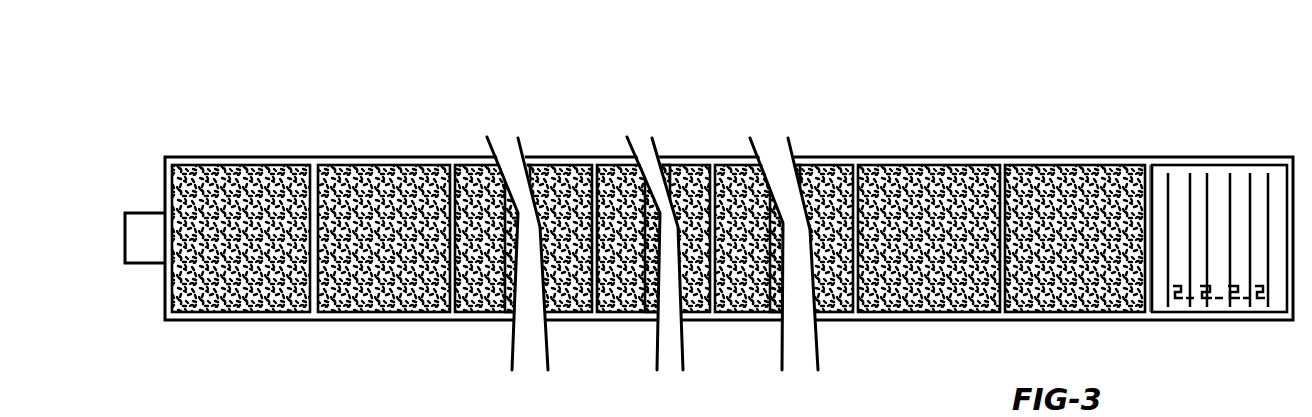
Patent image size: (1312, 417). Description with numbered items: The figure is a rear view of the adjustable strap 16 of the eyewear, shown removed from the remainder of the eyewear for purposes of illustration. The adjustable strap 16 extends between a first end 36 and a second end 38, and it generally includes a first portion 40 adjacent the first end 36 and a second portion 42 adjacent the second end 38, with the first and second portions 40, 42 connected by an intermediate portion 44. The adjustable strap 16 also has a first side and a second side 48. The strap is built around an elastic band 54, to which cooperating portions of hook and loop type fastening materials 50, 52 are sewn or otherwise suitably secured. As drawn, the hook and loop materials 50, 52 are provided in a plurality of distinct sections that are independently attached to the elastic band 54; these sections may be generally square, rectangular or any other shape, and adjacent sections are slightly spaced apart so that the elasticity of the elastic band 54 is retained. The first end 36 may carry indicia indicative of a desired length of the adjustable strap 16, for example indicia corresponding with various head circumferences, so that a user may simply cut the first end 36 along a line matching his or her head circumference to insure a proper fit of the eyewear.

The adjustable strap 16 is at (1178, 95).
The first end 36 is at (1233, 157).
The second end 38 is at (185, 156).
The first portion 40 is at (992, 148).
The second portion 42 is at (323, 148).
The intermediate portion 44 is at (716, 148).
The second side 48 is at (1145, 157).
The hook and loop type fastening material 50 is at (917, 167).
The hook and loop type fastening material 52 is at (396, 157).
The elastic band 54 is at (459, 157).